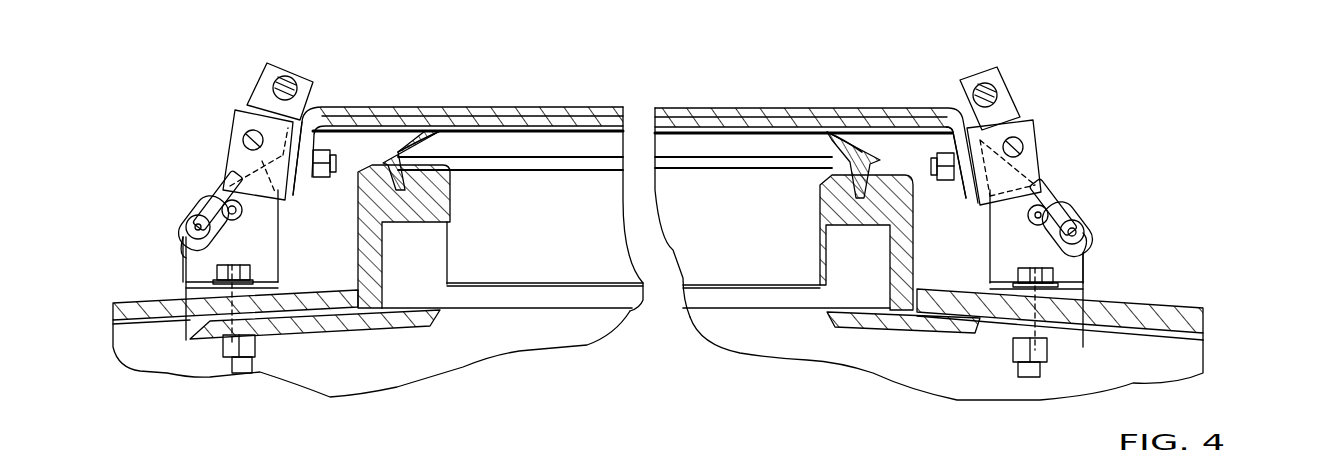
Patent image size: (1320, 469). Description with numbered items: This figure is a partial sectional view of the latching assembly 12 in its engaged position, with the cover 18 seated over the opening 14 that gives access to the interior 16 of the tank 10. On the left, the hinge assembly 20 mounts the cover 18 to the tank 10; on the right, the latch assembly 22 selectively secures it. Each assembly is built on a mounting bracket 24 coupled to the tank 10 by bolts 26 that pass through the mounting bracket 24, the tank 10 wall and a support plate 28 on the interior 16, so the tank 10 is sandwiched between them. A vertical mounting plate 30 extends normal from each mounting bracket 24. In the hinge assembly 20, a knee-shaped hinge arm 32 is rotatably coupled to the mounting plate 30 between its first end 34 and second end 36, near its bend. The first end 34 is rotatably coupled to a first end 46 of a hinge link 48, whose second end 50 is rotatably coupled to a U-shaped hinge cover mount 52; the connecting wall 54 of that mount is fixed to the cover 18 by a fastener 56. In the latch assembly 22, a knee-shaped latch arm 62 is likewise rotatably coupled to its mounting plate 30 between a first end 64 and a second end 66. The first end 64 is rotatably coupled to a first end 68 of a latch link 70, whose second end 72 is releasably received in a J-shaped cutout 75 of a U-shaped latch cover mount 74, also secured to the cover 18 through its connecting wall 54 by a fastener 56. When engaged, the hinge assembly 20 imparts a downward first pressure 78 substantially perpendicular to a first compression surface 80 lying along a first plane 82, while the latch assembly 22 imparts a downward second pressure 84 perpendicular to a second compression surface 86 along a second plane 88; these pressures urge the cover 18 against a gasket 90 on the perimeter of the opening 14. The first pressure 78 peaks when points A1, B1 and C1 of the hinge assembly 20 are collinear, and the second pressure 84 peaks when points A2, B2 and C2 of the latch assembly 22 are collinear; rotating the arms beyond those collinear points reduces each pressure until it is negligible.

The tank 10 is at (1188, 310).
The latching assembly 12 is at (858, 104).
The opening 14 is at (582, 197).
The interior 16 is at (378, 369).
The cover 18 is at (748, 106).
The hinge assembly 20 is at (176, 187).
The latch assembly 22 is at (1094, 190).
The mounting bracket 24 is at (197, 283).
The bolts 26 is at (278, 265).
The support plate 28 is at (425, 328).
The mounting plate 30 is at (183, 248).
The hinge arm 32 is at (256, 80).
The first end 34 is at (185, 215).
The second end 36 is at (285, 62).
The first end 46 is at (195, 205).
The hinge link 48 is at (200, 205).
The second end 50 is at (248, 135).
The hinge cover mount 52 is at (287, 100).
The connecting wall 54 is at (290, 195).
The fastener 56 is at (322, 150).
The latch arm 62 is at (1034, 120).
The first end 64 is at (1088, 238).
The second end 66 is at (990, 68).
The first end 68 is at (1085, 247).
The latch link 70 is at (1068, 190).
The second end 72 is at (1020, 145).
The latch cover mount 74 is at (987, 212).
The J-shaped cutout 75 is at (1005, 118).
The first pressure 78 is at (365, 104).
The first compression surface 80 is at (325, 132).
The first plane 82 is at (410, 131).
The second pressure 84 is at (927, 104).
The second compression surface 86 is at (948, 136).
The second plane 88 is at (860, 138).
The gasket 90 is at (430, 135).
The point A1 is at (245, 141).
The point A2 is at (1022, 150).
The point B1 is at (232, 212).
The point B2 is at (1038, 225).
The point C1 is at (234, 307).
The point C2 is at (1035, 310).